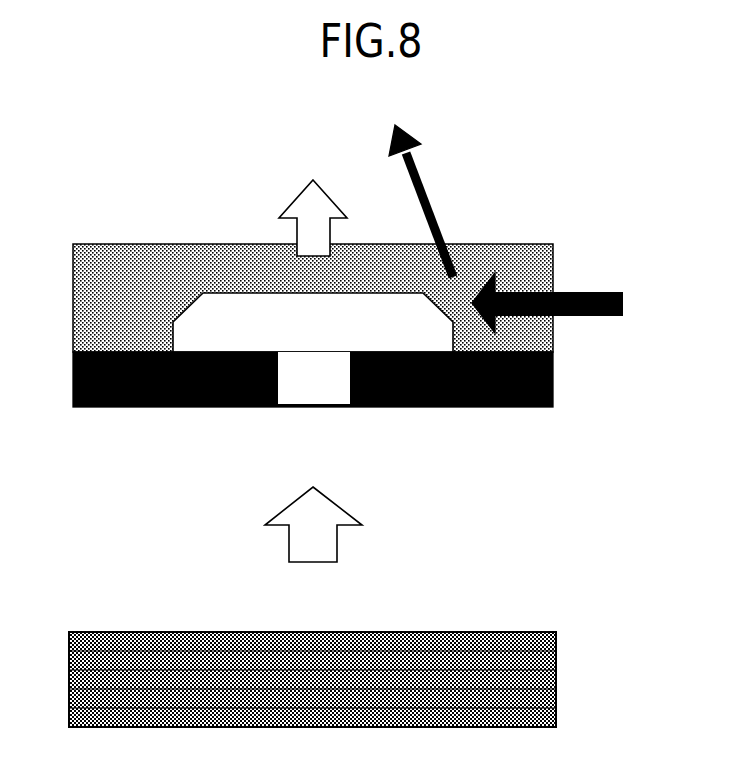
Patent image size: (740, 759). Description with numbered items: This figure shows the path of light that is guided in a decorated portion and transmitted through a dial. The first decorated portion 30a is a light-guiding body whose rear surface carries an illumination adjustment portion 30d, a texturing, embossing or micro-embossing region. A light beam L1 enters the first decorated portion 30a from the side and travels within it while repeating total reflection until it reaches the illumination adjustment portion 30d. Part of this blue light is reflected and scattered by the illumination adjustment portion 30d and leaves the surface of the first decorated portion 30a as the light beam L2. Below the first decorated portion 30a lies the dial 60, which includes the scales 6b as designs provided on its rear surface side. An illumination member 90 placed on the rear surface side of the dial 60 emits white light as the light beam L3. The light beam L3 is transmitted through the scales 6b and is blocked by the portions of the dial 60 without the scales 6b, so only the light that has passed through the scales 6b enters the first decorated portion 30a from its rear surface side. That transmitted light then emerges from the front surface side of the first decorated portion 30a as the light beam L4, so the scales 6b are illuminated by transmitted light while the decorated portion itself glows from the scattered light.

The first decorated portion 30a is at (528, 268).
The illumination adjustment portion 30d is at (213, 281).
The dial 60 is at (554, 393).
The scales 6b is at (303, 398).
The illumination member 90 is at (556, 676).
The light beam L1 is at (547, 298).
The light beam L2 is at (421, 191).
The light beam L3 is at (315, 550).
The light beam L4 is at (307, 210).